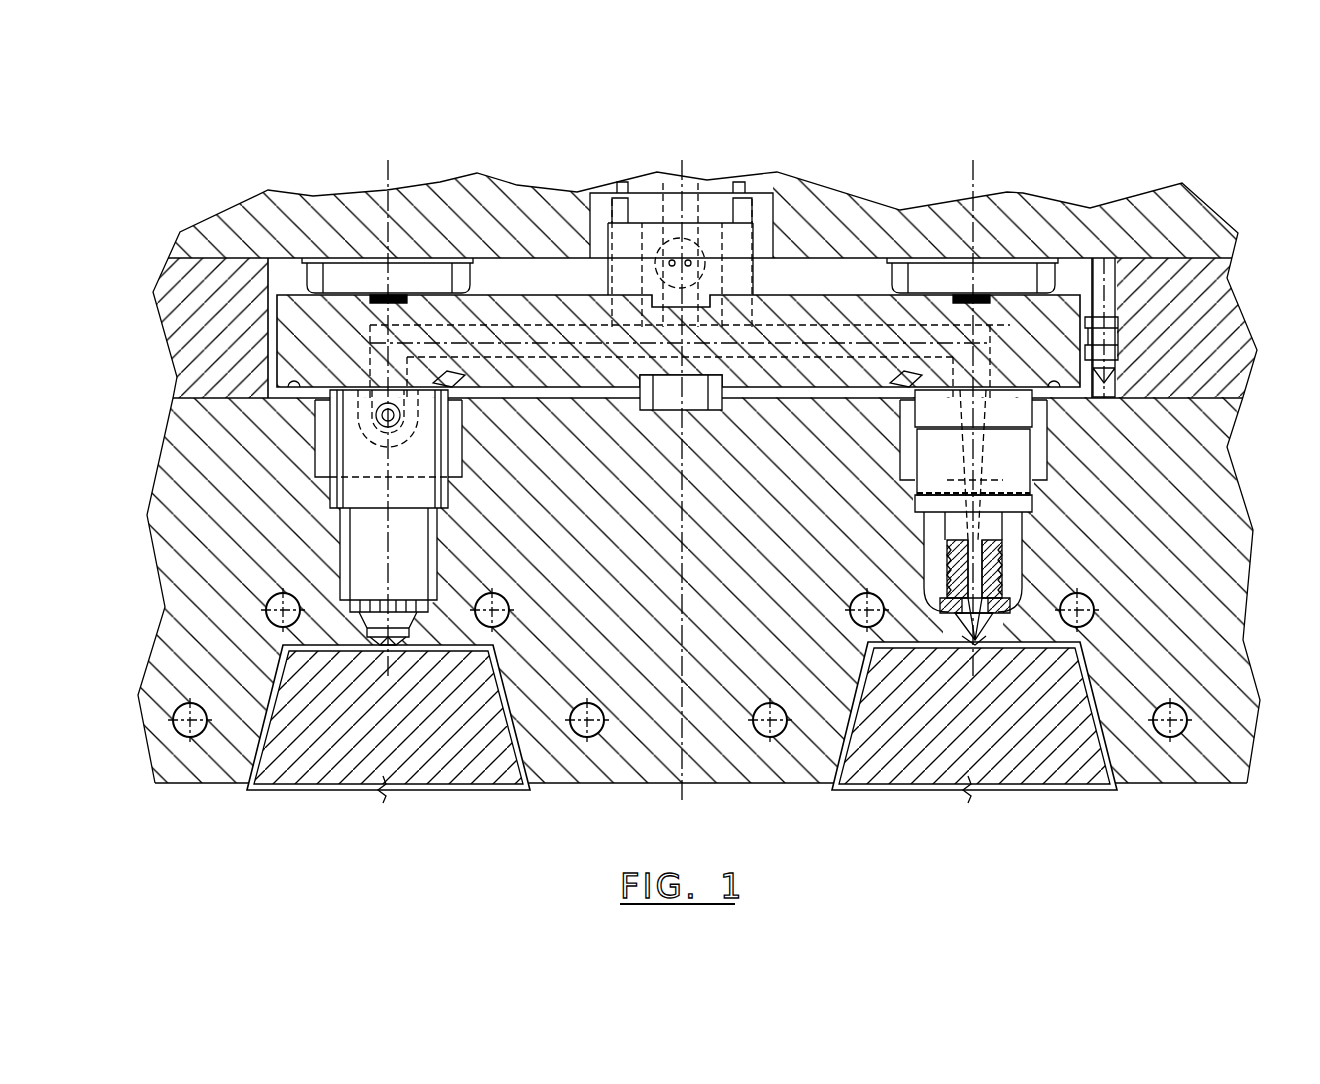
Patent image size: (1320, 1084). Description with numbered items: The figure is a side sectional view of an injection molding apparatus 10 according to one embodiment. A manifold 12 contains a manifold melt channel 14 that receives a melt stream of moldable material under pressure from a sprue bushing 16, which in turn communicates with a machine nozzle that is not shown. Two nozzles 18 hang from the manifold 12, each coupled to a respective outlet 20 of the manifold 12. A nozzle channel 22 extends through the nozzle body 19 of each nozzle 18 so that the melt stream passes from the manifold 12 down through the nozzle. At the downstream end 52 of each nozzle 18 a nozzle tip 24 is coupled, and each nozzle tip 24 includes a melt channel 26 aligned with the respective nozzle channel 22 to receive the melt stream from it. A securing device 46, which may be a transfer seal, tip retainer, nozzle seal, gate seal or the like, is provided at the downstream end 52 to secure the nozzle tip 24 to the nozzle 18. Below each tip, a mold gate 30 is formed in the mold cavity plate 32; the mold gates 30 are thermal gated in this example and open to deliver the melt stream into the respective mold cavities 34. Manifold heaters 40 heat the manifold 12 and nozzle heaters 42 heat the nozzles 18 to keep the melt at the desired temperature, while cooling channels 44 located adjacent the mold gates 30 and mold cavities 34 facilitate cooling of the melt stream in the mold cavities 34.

The injection molding apparatus 10 is at (1062, 98).
The manifold 12 is at (817, 313).
The manifold melt channel 14 is at (537, 327).
The sprue bushing 16 is at (710, 182).
The nozzle 18 is at (446, 530).
The nozzle body 19 is at (404, 565).
The outlet 20 is at (398, 392).
The nozzle channel 22 is at (1033, 500).
The nozzle tip 24 is at (993, 613).
The melt channel 26 is at (953, 587).
The mold gate 30 is at (386, 645).
The mold cavity plate 32 is at (807, 645).
The mold cavity 34 is at (850, 722).
The manifold heater 40 is at (905, 388).
The nozzle heater 42 is at (948, 556).
The cooling channel 44 is at (1180, 705).
The securing device 46 is at (993, 610).
The downstream end 52 is at (1003, 573).